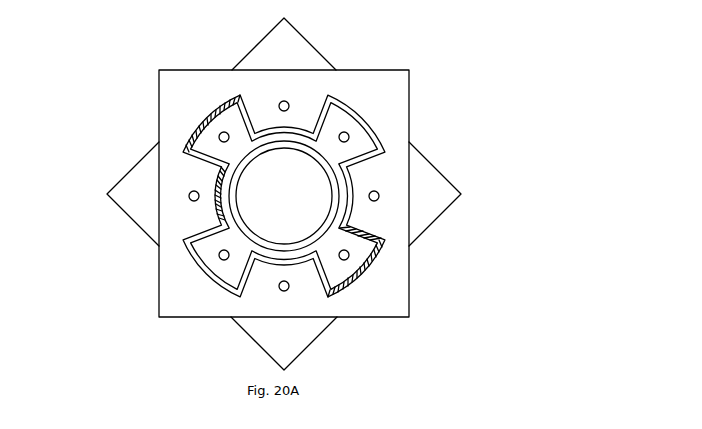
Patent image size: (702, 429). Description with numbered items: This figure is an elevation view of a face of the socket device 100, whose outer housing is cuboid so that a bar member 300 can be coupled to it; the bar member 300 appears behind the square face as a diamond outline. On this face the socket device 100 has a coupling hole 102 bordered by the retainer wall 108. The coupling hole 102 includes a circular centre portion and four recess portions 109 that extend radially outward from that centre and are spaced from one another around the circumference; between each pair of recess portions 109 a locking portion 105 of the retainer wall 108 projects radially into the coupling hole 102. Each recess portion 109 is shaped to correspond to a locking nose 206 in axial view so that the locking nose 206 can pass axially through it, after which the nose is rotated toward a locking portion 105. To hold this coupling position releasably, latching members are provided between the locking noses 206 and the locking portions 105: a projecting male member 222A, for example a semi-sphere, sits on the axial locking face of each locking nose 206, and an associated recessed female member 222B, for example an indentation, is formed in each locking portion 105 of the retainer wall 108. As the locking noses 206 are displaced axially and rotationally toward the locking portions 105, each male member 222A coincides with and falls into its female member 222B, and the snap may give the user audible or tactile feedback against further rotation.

The socket device 100 is at (393, 127).
The coupling hole 102 is at (343, 103).
The locking portion 105 is at (192, 175).
The retainer wall 108 is at (197, 112).
The recess portion 109 is at (383, 239).
The locking nose 206 is at (342, 274).
The male member 222A is at (218, 254).
The female member 222B is at (380, 196).
The bar member 300 is at (427, 172).